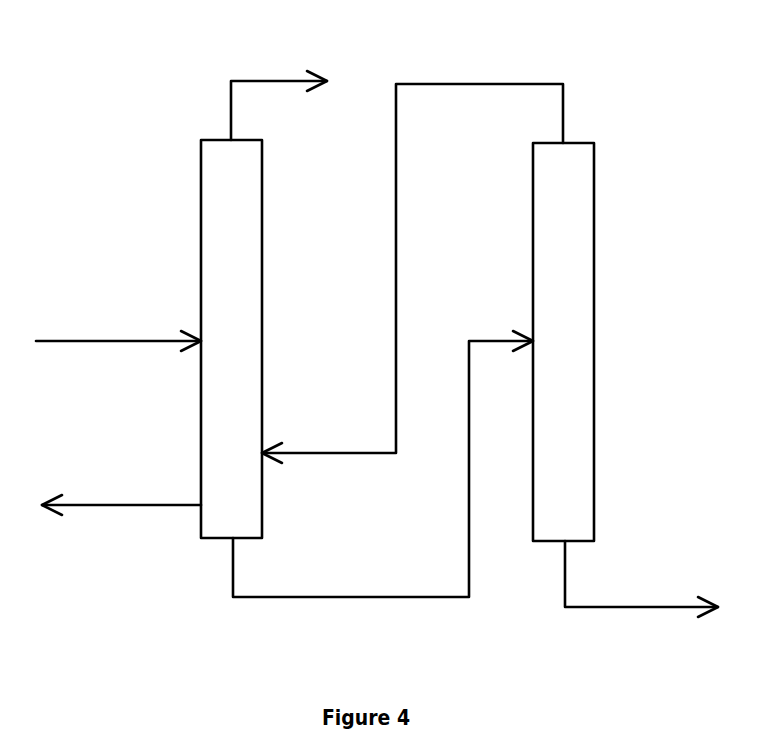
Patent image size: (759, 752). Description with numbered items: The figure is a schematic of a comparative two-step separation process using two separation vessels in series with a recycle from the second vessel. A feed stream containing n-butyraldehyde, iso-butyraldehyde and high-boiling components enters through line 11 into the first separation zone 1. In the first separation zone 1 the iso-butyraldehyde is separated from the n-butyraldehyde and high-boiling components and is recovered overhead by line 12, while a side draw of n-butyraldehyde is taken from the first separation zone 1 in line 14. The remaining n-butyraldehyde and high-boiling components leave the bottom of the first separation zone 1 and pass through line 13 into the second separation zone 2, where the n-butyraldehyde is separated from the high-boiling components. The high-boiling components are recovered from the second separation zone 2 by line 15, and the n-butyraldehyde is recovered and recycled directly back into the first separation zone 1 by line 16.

The first separation zone 1 is at (231, 339).
The second separation zone 2 is at (563, 342).
The line 11 is at (114, 307).
The line 12 is at (279, 79).
The line 13 is at (383, 496).
The line 14 is at (120, 543).
The line 15 is at (641, 602).
The line 16 is at (412, 242).